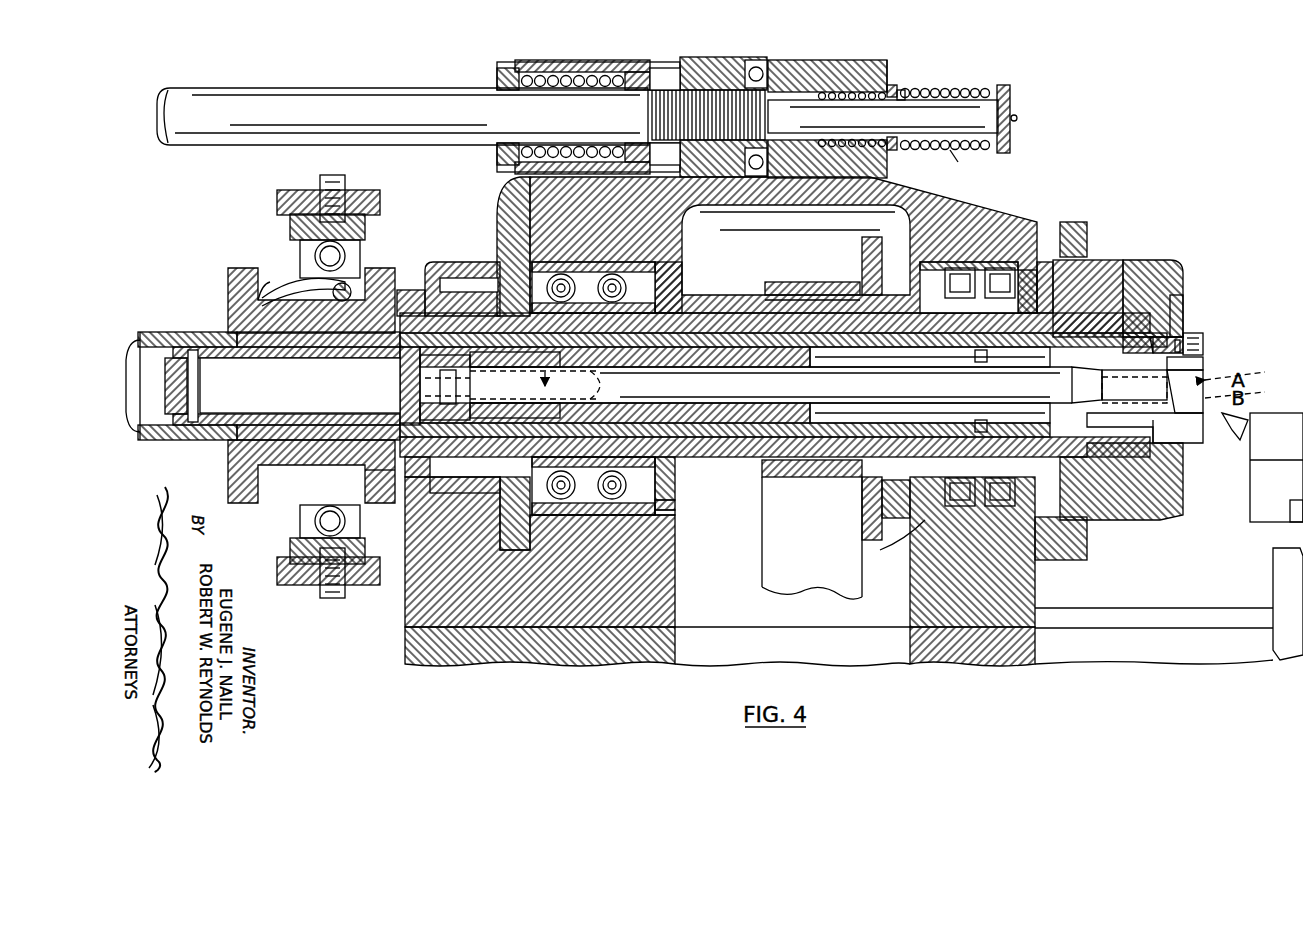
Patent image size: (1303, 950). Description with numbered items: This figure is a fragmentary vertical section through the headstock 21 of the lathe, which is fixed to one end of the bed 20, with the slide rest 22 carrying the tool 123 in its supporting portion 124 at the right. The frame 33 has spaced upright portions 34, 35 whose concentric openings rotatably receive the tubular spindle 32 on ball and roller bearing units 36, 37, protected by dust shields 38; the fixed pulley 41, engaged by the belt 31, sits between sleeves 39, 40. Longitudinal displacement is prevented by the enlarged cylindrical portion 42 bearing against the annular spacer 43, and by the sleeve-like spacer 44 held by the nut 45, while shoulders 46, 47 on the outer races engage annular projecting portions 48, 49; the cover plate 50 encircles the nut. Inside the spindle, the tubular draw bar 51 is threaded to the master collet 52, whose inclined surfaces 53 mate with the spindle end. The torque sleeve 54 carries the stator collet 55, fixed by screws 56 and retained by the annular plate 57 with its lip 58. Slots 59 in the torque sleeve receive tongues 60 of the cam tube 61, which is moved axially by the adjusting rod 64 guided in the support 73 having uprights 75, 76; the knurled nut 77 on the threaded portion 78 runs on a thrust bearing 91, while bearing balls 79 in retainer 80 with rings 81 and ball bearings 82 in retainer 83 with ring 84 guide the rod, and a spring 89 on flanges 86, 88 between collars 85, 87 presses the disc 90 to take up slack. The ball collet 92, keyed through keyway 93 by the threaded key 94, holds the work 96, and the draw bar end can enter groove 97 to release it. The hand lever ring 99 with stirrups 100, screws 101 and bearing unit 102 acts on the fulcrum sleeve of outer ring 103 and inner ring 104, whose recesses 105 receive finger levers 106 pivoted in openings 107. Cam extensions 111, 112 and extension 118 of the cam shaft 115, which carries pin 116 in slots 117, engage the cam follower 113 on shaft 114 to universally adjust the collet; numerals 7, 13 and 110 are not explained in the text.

The section line 7 is at (445, 369).
The key 13 is at (465, 384).
The bed 20 is at (1124, 660).
The headstock 21 is at (1092, 540).
The slide rest 22 is at (1270, 572).
The second belt 31 is at (770, 563).
The spindle 32 is at (725, 320).
The frame 33 is at (968, 186).
The upright portion 34 is at (676, 600).
The upright portion 35 is at (918, 578).
The ball and roller bearing unit 36 is at (660, 488).
The ball and roller bearing unit 37 is at (910, 548).
The dust shields 38 is at (528, 232).
The sleeve 39 is at (672, 306).
The sleeve 40 is at (930, 290).
The fixed pulley 41 is at (815, 292).
The cylindrical portion 42 is at (1105, 262).
The annular spacer 43 is at (1046, 296).
The sleeve-like spacer 44 is at (452, 280).
The nut 45 is at (408, 292).
The shoulder 46 is at (664, 513).
The shoulder 47 is at (912, 508).
The annular projecting portion 48 is at (668, 505).
The annular projecting portion 49 is at (872, 505).
The cover plate 50 is at (510, 195).
The tubular draw bar 51 is at (163, 331).
The master collet 52 is at (1148, 347).
The inclined surfaces 53 is at (1172, 275).
The torque sleeve 54 is at (755, 363).
The stator collet 55 is at (1205, 340).
The screws 56 is at (982, 420).
The annular plate 57 is at (1180, 290).
The annular lip 58 is at (1180, 335).
The longitudinal slots 59 is at (618, 384).
The tongues 60 is at (600, 390).
The cam tube 61 is at (292, 348).
The adjusting rod 64 is at (385, 100).
The support 73 is at (890, 70).
The upright 75 is at (588, 62).
The upright 76 is at (838, 60).
The knurled adjusting nut 77 is at (722, 60).
The threaded portion 78 is at (676, 92).
The bearing balls 79 is at (540, 76).
The annular retainer 80 is at (502, 68).
The annular rings 81 is at (505, 78).
The ball bearings 82 is at (888, 62).
The retainer 83 is at (862, 92).
The ring 84 is at (806, 100).
The flanged ring 85 is at (902, 90).
The flange 86 is at (922, 149).
The second flanged ring 87 is at (1000, 85).
The flange 88 is at (970, 88).
The coiled compression spring 89 is at (956, 165).
The disc 90 is at (1012, 100).
The thrust bearing 91 is at (758, 62).
The ball collet 92 is at (1205, 378).
The keyway 93 is at (1200, 362).
The threaded key 94 is at (1180, 345).
The piece of work 96 is at (1245, 379).
The groove 97 is at (1178, 448).
The hand lever ring 99 is at (365, 190).
The stirrups 100 is at (362, 224).
The screws 101 is at (330, 176).
The annular ball bearing unit 102 is at (360, 262).
The outer ring 103 is at (372, 490).
The inner ring 104 is at (280, 470).
The recesses 105 is at (331, 322).
The finger levers 106 is at (266, 284).
The openings 107 is at (290, 286).
The housing 110 is at (240, 290).
The extension 111 is at (515, 364).
The extension 112 is at (515, 410).
The cam follower 113 is at (462, 410).
The shaft 114 is at (790, 478).
The cam shaft 115 is at (196, 425).
The pin 116 is at (200, 380).
The slots 117 is at (186, 333).
The extension 118 is at (402, 398).
The cutting or abrading tool 123 is at (1234, 430).
The supporting portion 124 is at (1258, 506).